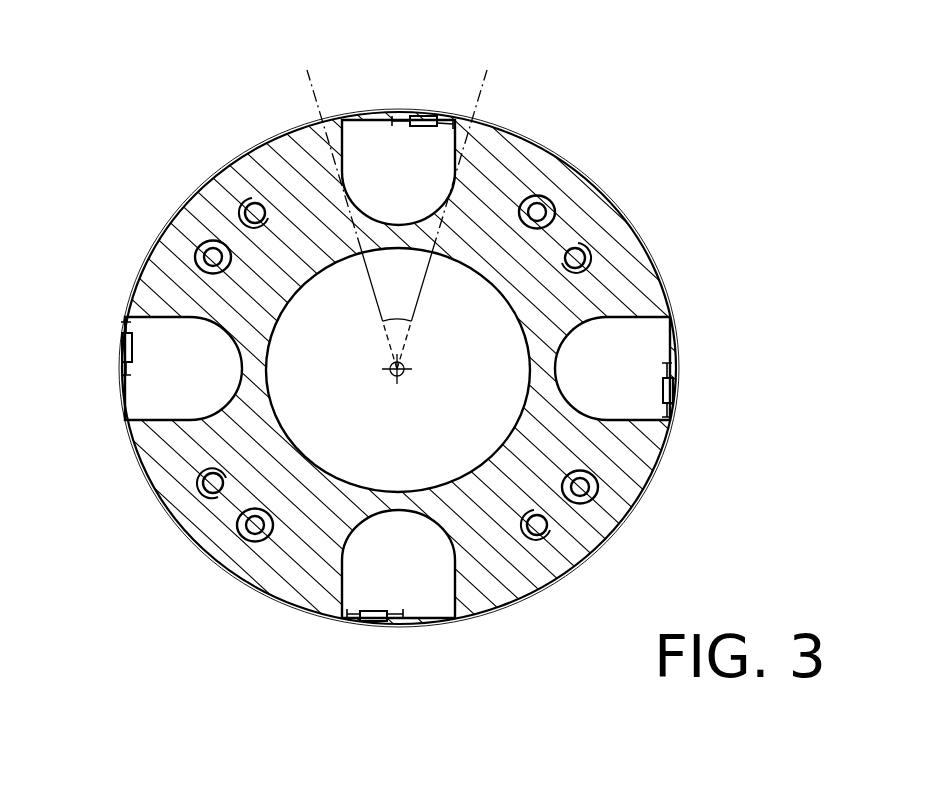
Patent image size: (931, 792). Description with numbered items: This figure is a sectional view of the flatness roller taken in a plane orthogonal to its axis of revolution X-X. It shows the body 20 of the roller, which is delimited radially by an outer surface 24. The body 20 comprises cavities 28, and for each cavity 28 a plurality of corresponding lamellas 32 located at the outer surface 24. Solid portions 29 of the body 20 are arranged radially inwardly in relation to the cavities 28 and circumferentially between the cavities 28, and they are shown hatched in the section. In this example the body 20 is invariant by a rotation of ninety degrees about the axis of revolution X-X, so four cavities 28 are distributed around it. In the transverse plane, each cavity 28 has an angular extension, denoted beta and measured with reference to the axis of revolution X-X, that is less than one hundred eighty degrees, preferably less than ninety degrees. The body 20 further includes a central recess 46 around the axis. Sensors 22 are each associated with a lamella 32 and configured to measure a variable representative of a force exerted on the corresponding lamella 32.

The body 20 is at (656, 138).
The sensor 22 is at (433, 117).
The outer surface 24 is at (637, 222).
The cavity 28 is at (143, 373).
The solid portion 29 is at (215, 205).
The lamella 32 is at (371, 112).
The central recess 46 is at (303, 396).